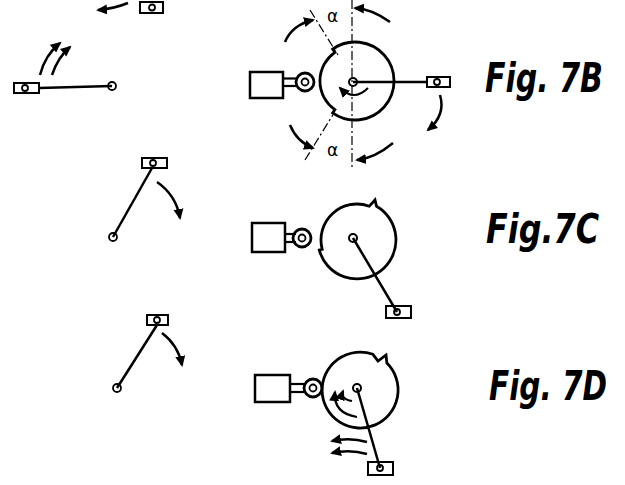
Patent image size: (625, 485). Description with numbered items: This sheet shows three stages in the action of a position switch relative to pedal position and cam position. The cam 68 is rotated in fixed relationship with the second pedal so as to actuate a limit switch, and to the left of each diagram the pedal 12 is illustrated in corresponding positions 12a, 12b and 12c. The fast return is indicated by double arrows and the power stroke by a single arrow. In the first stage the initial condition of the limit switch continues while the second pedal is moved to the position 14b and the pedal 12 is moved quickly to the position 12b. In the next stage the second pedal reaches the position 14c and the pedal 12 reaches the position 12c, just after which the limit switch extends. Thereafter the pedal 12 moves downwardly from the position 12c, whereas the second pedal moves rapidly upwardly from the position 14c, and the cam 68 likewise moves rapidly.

In FIG. 7D, the pedal 12 is at (165, 314).
In FIG. 7B, the pedal position a 12a is at (164, 10).
In FIG. 7B, the pedal position b 12b is at (30, 95).
In FIG. 7C, the pedal position c 12c is at (160, 157).
In FIG. 7B, the pedal position b 14b is at (433, 76).
In FIG. 7C, the pedal position c 14c is at (385, 312).
In FIG. 7D, the pedal position c 14c is at (394, 462).
In FIG. 7D, the cam 68 is at (392, 366).